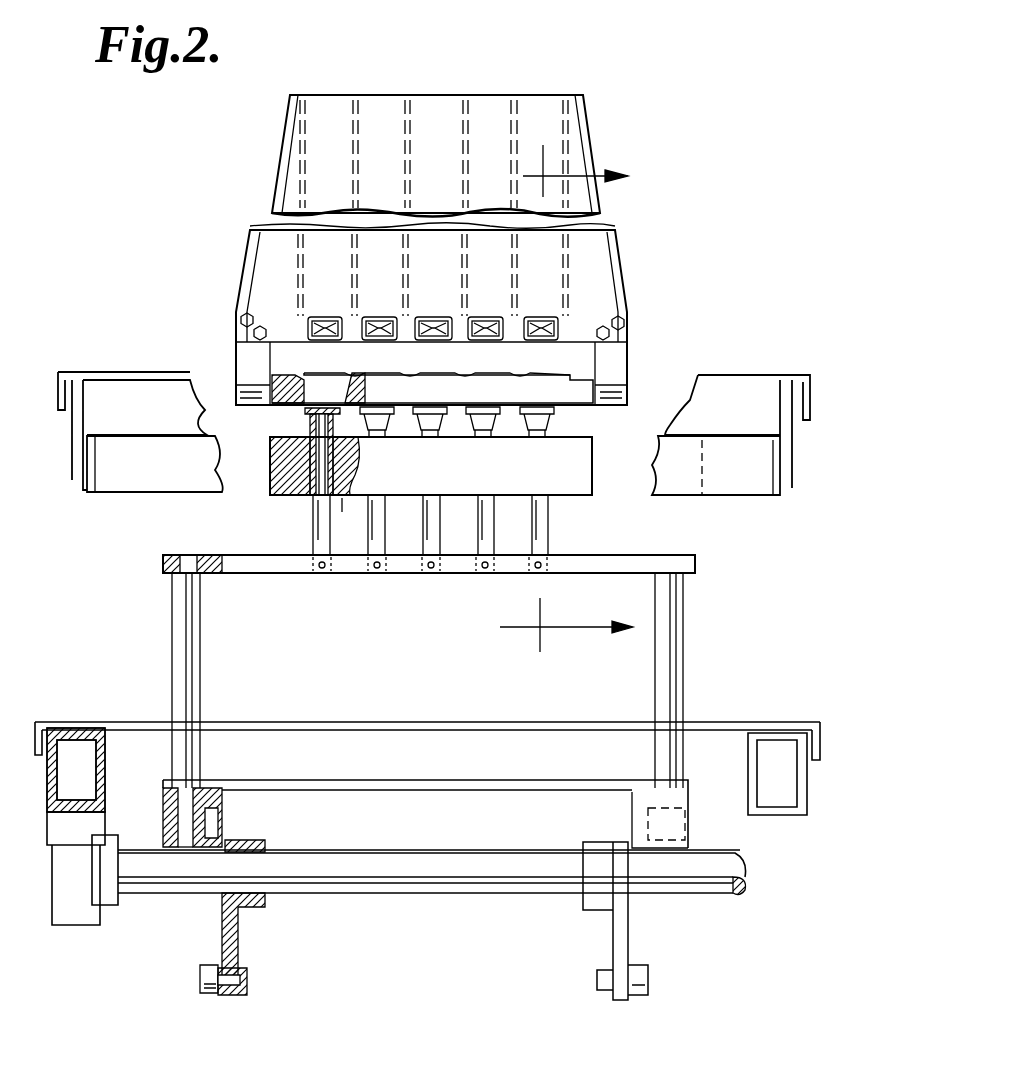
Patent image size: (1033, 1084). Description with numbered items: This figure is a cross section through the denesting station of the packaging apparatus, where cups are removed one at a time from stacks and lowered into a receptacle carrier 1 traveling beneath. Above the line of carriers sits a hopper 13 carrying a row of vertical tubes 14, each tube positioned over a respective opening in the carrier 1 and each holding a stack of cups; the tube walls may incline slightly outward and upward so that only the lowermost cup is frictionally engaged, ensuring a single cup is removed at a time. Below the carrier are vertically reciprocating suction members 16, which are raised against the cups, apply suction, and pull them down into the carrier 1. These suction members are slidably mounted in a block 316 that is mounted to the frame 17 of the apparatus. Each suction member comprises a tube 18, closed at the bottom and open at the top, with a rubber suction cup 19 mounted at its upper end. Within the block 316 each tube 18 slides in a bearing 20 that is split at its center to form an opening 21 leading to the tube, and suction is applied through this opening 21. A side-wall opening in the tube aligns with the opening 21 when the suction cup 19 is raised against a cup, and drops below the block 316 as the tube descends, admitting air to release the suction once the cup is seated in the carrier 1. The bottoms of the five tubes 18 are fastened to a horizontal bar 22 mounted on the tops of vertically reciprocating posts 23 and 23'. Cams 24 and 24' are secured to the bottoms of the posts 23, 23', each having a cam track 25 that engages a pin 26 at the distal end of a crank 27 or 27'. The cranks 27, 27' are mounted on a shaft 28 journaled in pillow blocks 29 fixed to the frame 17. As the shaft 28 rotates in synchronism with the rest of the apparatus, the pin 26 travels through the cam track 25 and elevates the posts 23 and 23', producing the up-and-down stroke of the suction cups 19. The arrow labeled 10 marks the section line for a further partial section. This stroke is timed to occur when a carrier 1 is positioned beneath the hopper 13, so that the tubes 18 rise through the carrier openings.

The carrier 1 is at (560, 396).
The section line 10- 10 is at (590, 409).
The hopper 13 is at (628, 300).
The vertical tube 14 is at (493, 112).
The suction member 16 is at (565, 421).
The frame 17 is at (105, 777).
The tube 18 is at (312, 528).
The suction cup 19 is at (305, 412).
The bearing 20 is at (353, 523).
The opening 21 is at (305, 465).
The horizontal bar 22 is at (630, 576).
The post 23 is at (222, 680).
The post 23' is at (704, 680).
The cam 24 is at (224, 815).
The cam 24' is at (685, 820).
The cam track 25 is at (246, 836).
The pin 26 is at (210, 996).
The crank 27 is at (261, 936).
The crank 27' is at (640, 921).
The shaft 28 is at (432, 857).
The pillow block 29 is at (90, 920).
The block 316 is at (580, 478).